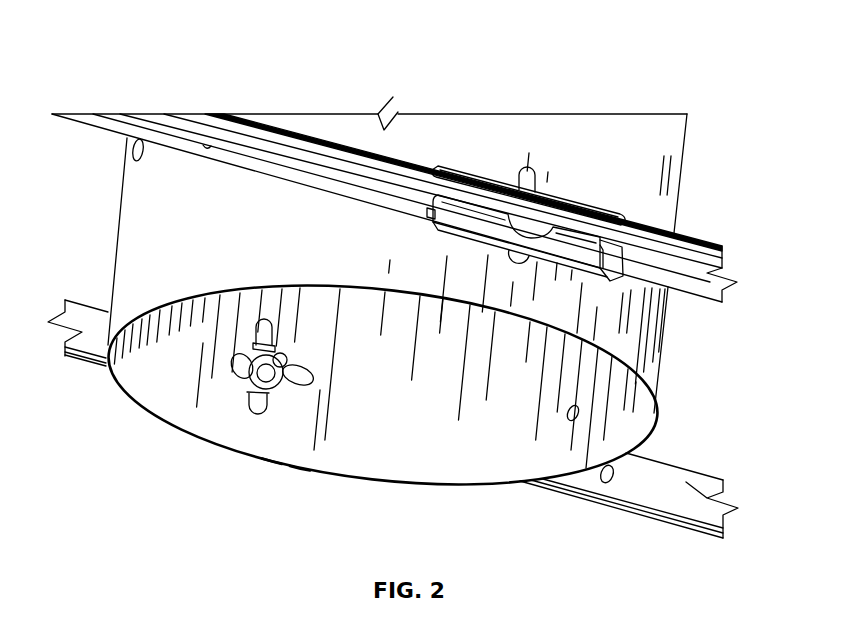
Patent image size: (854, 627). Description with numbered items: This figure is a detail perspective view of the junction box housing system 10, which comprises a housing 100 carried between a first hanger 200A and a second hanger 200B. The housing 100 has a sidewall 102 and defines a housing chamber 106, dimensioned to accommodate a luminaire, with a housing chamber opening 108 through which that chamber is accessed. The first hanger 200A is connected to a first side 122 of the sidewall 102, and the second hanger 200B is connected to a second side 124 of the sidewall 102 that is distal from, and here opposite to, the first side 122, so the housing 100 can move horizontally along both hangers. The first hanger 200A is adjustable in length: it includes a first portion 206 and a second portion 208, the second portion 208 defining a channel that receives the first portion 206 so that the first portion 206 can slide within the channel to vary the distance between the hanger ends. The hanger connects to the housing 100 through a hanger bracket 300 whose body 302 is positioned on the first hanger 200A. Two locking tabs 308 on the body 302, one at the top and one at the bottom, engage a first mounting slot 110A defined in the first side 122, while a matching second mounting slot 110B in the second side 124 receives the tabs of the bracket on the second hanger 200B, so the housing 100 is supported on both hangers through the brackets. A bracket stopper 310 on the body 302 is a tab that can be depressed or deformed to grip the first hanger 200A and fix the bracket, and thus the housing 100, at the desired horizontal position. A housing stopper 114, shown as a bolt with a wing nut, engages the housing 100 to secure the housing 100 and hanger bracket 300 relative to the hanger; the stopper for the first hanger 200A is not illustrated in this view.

The junction box housing system 10 is at (686, 43).
The housing 100 is at (661, 337).
The sidewall 102 is at (163, 415).
The housing chamber 106 is at (420, 476).
The housing chamber opening 108 is at (300, 471).
The first mounting slot 110A is at (537, 173).
The second mounting slot 110B is at (268, 318).
The housing stopper 114 is at (313, 381).
The first side 122 is at (533, 128).
The second side 124 is at (273, 464).
The first hanger 200A is at (725, 249).
The second hanger 200B is at (657, 469).
The first portion 206 is at (728, 289).
The second portion 208 is at (289, 130).
The hanger bracket 300 is at (573, 208).
The body 302 is at (470, 178).
The locking tab 308 is at (517, 263).
The bracket stopper 310 is at (642, 232).